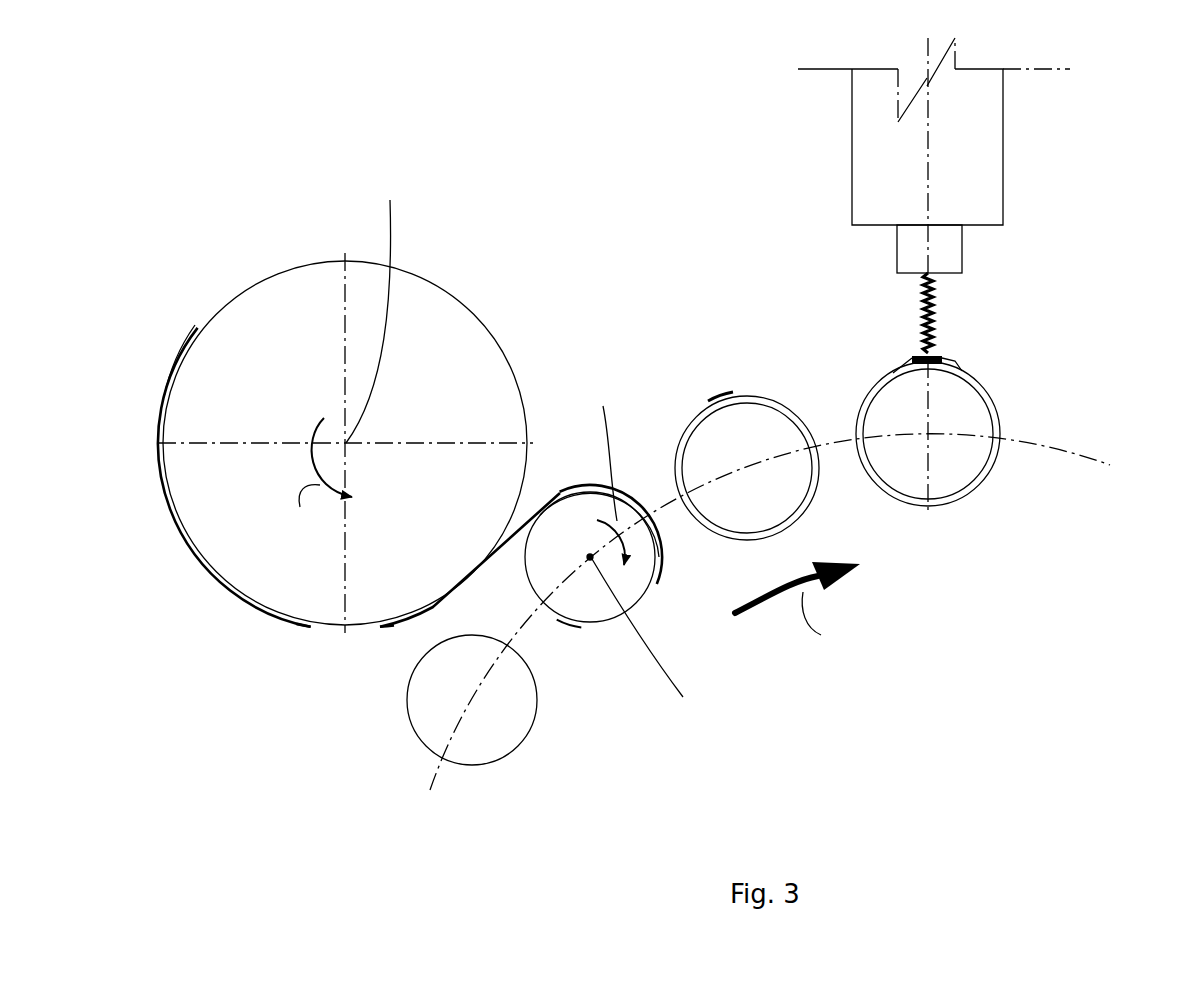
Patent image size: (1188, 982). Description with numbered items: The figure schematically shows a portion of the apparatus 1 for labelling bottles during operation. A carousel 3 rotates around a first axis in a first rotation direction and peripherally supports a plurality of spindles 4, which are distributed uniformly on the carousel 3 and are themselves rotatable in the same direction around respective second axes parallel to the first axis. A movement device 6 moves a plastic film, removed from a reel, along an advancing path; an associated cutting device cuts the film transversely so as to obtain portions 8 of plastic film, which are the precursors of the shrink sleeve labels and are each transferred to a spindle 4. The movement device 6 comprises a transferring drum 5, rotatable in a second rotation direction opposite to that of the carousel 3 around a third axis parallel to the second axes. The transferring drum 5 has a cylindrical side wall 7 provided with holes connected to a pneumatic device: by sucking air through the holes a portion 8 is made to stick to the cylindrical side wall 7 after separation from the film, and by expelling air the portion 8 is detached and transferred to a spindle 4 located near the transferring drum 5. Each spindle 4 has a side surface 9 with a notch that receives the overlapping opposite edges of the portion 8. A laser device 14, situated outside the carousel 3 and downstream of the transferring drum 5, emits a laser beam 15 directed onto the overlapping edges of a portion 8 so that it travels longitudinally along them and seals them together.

The apparatus 1 is at (590, 193).
The carousel 3 is at (1138, 500).
The spindles 4 is at (433, 703).
The transferring drum 5 is at (433, 348).
The movement device 6 is at (270, 220).
The cylindrical side wall 7 is at (226, 310).
The portions of plastic film 8 is at (258, 613).
The side surface 9 is at (528, 577).
The laser device 14 is at (1044, 142).
The laser beam 15 is at (940, 321).